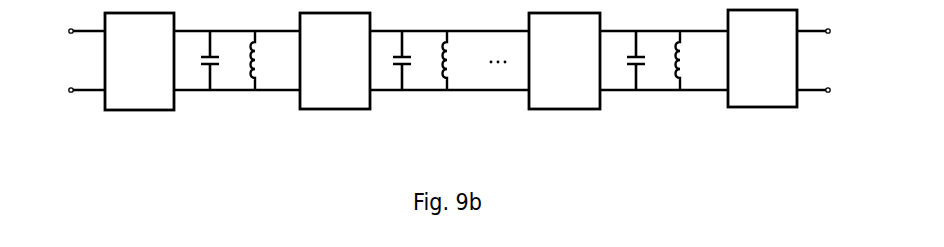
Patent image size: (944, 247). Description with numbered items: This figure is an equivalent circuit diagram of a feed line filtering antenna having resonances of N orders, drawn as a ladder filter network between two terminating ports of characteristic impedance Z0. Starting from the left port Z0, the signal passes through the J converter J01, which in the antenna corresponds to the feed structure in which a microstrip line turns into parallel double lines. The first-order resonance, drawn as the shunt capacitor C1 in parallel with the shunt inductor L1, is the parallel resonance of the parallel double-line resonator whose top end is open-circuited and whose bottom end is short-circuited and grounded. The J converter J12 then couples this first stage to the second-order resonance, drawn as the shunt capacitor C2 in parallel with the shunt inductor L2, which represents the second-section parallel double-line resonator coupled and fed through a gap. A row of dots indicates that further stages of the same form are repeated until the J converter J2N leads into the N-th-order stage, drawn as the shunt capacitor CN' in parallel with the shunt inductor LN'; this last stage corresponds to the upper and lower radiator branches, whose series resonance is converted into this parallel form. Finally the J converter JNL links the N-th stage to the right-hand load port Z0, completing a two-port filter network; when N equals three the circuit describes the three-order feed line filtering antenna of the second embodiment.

The characteristic impedance / terminating port Z0 is at (449, 62).
The J converter J01 is at (139, 61).
The shunt capacitor C1 is at (221, 60).
The shunt inductor L1 is at (265, 60).
The J converter J12 is at (335, 61).
The shunt capacitor C2 is at (413, 60).
The shunt inductor L2 is at (457, 60).
The admittance inverter J2N is at (564, 61).
The shunt capacitor CN' is at (647, 60).
The shunt inductor LN' is at (693, 60).
The admittance inverter JNL is at (762, 58).